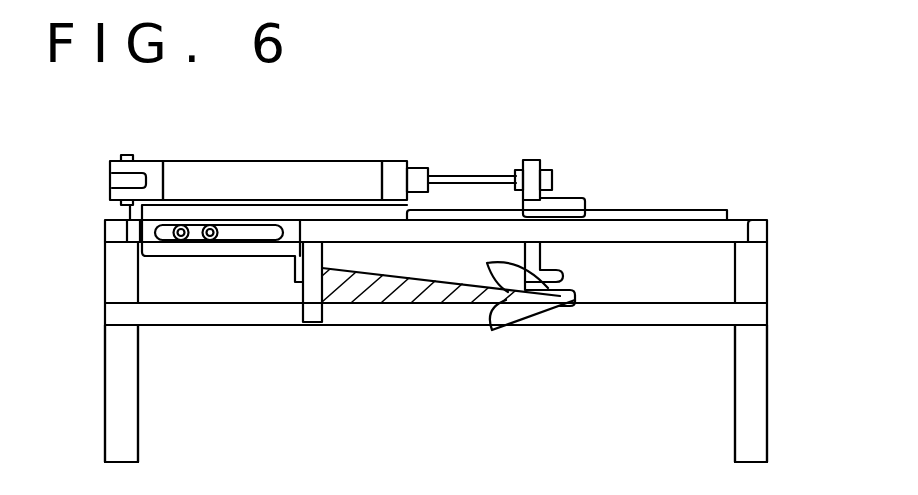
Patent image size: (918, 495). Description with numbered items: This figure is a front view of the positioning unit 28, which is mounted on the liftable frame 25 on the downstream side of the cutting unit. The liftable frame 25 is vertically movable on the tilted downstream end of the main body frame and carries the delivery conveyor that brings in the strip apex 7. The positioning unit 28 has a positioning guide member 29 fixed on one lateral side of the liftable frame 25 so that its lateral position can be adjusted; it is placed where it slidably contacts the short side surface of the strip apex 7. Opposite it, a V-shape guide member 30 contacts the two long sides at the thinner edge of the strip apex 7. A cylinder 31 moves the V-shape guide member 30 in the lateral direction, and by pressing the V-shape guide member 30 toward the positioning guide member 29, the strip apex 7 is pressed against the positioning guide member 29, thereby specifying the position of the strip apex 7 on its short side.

The strip apex 7 is at (382, 308).
The liftable frame 25 is at (115, 387).
The positioning unit 28 is at (607, 188).
The positioning guide member 29 is at (303, 320).
The V-shape guide member 30 is at (512, 320).
The cylinder 31 is at (321, 172).